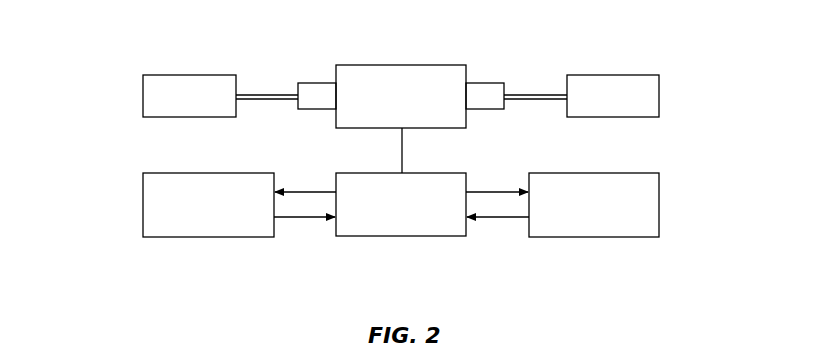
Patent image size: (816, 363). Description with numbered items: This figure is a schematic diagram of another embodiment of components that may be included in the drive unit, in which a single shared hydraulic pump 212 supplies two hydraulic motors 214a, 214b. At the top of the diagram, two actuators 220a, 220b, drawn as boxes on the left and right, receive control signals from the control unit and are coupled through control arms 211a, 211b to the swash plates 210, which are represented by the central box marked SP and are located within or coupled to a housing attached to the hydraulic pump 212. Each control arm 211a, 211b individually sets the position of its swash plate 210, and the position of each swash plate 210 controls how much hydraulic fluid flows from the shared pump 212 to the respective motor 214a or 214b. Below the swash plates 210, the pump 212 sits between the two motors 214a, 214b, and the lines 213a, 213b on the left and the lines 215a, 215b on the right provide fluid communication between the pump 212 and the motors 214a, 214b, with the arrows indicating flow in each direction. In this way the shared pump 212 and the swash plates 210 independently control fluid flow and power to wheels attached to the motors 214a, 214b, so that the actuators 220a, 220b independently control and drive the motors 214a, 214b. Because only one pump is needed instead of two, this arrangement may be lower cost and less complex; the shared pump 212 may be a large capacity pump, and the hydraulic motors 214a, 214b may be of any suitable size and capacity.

The swash plate 210 is at (392, 65).
The control arm 211a is at (312, 83).
The control arm 211b is at (490, 83).
The shared hydraulic pump 212 is at (392, 173).
The line 213a is at (304, 190).
The line 213b is at (304, 220).
The hydraulic motor 214a is at (143, 203).
The hydraulic motor 214b is at (659, 203).
The line 215a is at (497, 190).
The line 215b is at (497, 220).
The actuator 220a is at (143, 96).
The actuator 220b is at (659, 96).